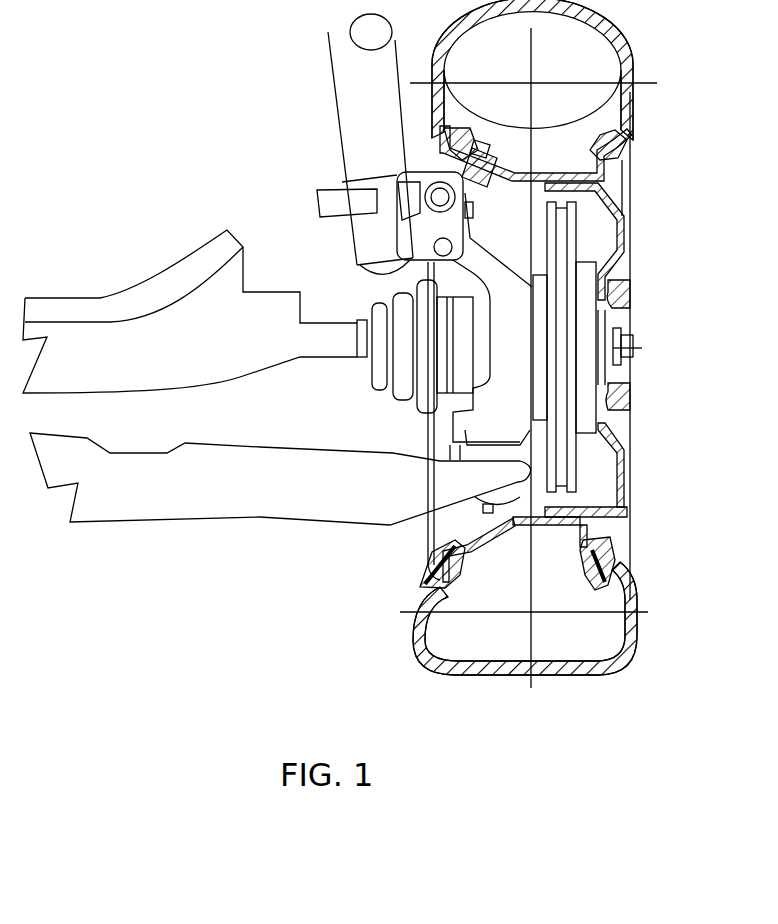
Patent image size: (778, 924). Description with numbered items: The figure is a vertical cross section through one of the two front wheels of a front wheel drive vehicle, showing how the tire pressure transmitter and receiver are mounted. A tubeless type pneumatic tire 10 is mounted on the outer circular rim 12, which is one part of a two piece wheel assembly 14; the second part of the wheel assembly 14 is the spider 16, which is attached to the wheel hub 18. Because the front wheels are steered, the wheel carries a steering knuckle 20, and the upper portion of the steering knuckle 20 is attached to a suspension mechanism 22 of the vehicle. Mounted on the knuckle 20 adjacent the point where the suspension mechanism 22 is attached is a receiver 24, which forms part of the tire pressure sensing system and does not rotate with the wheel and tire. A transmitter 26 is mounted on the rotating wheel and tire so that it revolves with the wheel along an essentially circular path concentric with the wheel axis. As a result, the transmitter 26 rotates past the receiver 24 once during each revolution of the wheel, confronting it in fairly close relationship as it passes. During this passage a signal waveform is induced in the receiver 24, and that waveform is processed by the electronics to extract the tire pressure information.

The pneumatic tire 10 is at (633, 44).
The outer circular rim 12 is at (617, 147).
The wheel assembly 14 is at (620, 233).
The spider 16 is at (623, 262).
The wheel hub 18 is at (613, 467).
The steering knuckle 20 is at (481, 266).
The suspension mechanism 22 is at (342, 182).
The receiver 24 is at (467, 177).
The transmitter 26 is at (493, 172).